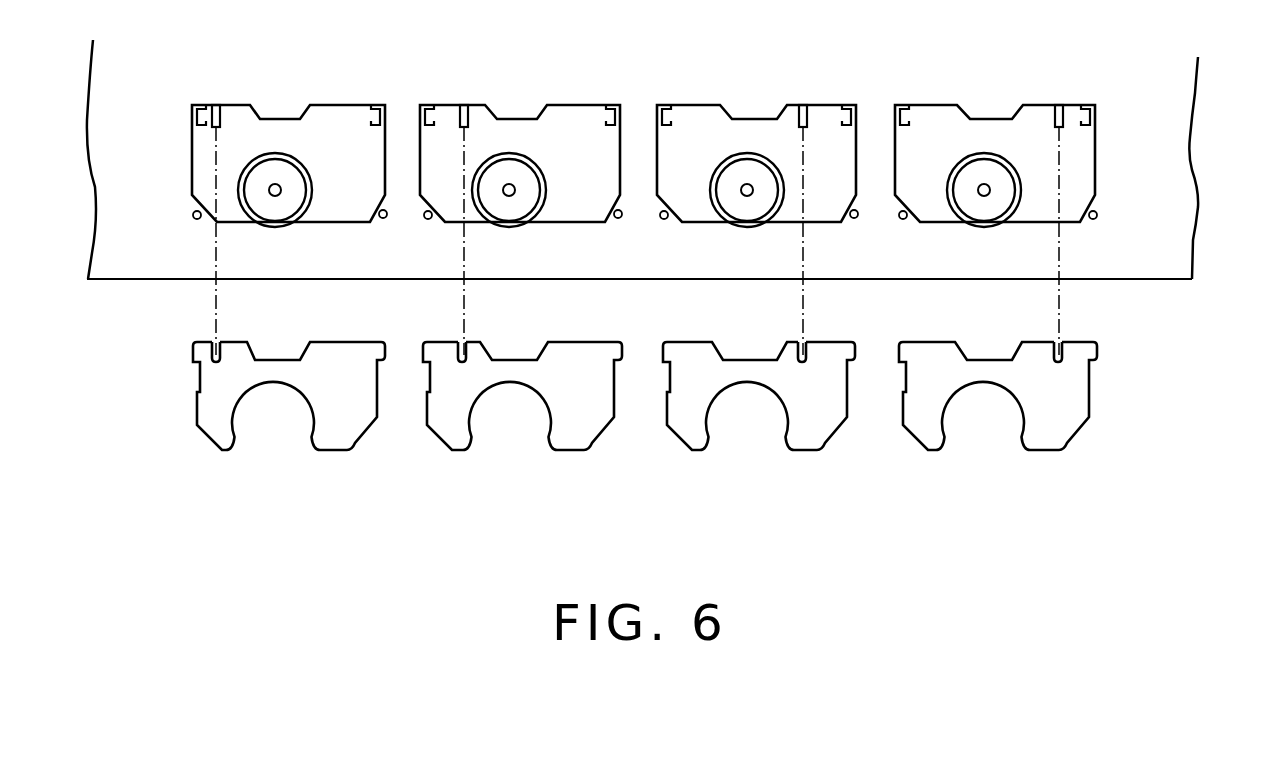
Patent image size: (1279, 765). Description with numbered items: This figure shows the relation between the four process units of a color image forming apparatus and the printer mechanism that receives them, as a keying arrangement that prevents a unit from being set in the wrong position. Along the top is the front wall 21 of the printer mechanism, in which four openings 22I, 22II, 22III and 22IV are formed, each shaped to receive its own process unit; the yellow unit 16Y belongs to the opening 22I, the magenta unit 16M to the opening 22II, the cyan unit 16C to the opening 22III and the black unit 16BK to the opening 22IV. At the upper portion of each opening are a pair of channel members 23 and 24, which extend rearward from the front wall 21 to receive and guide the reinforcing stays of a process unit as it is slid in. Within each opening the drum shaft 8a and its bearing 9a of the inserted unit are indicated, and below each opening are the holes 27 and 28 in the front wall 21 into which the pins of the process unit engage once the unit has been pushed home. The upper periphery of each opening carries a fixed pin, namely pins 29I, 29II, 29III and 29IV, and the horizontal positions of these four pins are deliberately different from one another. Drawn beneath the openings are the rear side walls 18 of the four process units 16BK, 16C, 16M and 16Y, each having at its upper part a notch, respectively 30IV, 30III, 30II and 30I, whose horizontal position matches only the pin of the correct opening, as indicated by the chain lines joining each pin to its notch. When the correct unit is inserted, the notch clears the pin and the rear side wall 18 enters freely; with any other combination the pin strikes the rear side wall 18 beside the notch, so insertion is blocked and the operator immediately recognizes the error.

The front wall 21 is at (1185, 240).
The opening 22IV is at (282, 138).
The opening 22III is at (552, 130).
The opening 22II is at (743, 127).
The opening 22I is at (970, 130).
The channel member 23 is at (195, 105).
The channel member 24 is at (373, 105).
The fixed pin 29IV is at (217, 104).
The fixed pin 29III is at (462, 105).
The fixed pin 29II is at (803, 105).
The fixed pin 29I is at (1062, 105).
The photosensitive drum shaft bearing 9a is at (290, 158).
The drum shaft 8a is at (273, 193).
The hole 27 is at (195, 218).
The hole 28 is at (381, 218).
The rear side wall 18 is at (670, 434).
The process unit 16BK is at (352, 430).
The process unit 16C is at (582, 430).
The process unit 16M is at (822, 430).
The process unit 16Y is at (1053, 430).
The notch 30IV is at (217, 340).
The notch 30III is at (463, 340).
The notch 30II is at (804, 340).
The notch 30I is at (1060, 340).